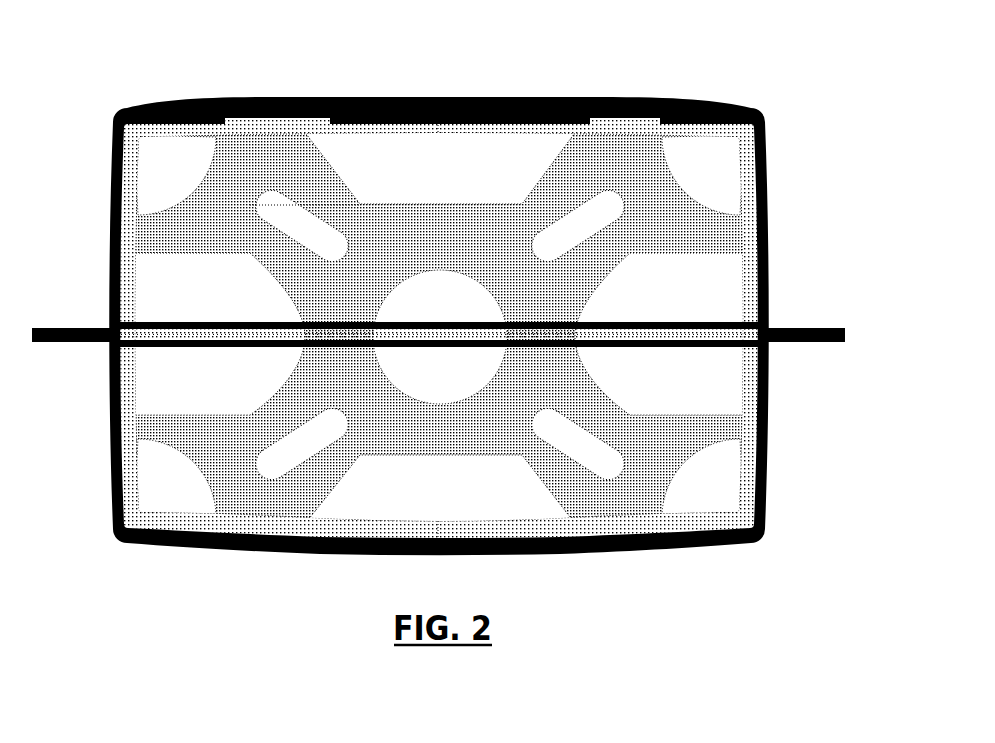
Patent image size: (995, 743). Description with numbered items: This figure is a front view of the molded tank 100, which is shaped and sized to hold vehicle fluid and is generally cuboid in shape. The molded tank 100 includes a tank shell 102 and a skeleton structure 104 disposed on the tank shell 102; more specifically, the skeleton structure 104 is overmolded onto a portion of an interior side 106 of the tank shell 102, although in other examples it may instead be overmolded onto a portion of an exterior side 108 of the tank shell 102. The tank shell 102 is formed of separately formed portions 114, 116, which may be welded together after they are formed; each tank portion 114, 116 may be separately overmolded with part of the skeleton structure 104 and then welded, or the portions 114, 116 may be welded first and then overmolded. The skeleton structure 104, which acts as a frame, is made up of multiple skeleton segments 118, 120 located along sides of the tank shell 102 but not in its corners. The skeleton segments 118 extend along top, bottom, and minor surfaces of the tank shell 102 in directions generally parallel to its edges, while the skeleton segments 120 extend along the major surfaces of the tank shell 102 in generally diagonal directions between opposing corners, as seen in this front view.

The molded tank 100 is at (178, 46).
The tank shell 102 is at (732, 100).
The skeleton structure 104 is at (410, 218).
The interior side 106 is at (137, 270).
The exterior side 108 is at (116, 168).
The tank portion 114 is at (788, 216).
The tank portion 116 is at (790, 467).
The skeleton segment 118 is at (165, 226).
The skeleton segment 120 is at (311, 183).